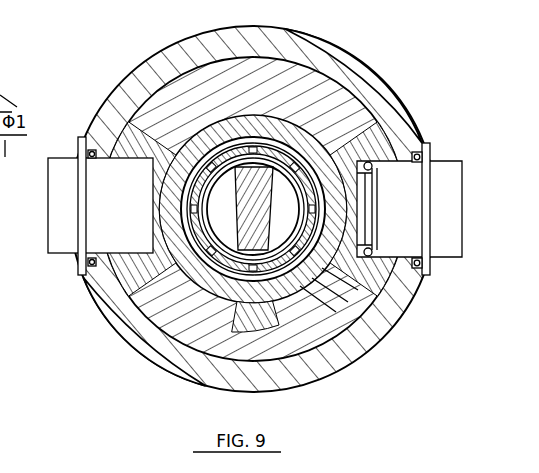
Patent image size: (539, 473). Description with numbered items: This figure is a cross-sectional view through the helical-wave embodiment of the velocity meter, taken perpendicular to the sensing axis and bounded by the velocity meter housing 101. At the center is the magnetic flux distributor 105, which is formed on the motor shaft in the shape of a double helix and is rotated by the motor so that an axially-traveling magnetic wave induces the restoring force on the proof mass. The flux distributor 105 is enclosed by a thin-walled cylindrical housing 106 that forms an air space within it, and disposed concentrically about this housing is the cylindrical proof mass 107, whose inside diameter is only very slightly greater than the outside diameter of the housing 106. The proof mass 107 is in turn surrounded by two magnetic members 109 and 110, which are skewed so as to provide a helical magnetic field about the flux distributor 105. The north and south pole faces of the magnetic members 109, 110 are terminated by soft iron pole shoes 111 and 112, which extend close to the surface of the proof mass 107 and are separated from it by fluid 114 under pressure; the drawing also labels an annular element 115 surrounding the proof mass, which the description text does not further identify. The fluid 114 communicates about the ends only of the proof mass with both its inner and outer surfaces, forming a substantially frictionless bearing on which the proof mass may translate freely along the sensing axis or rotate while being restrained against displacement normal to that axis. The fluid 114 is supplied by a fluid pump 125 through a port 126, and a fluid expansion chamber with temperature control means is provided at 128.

The velocity meter housing 101 is at (360, 64).
The magnetic flux distributor 105 is at (262, 180).
The cylindrical housing 106 is at (212, 240).
The cylindrical proof mass 107 is at (295, 236).
The magnetic member 109 is at (282, 29).
The magnetic member 110 is at (203, 382).
The soft iron pole shoe 111 is at (265, 130).
The soft iron pole shoe 112 is at (322, 294).
The fluid 114 is at (345, 208).
The sleeve 115 is at (222, 138).
The fluid pump 125 is at (448, 170).
The port 126 is at (358, 203).
The fluid expansion chamber 128 is at (62, 237).